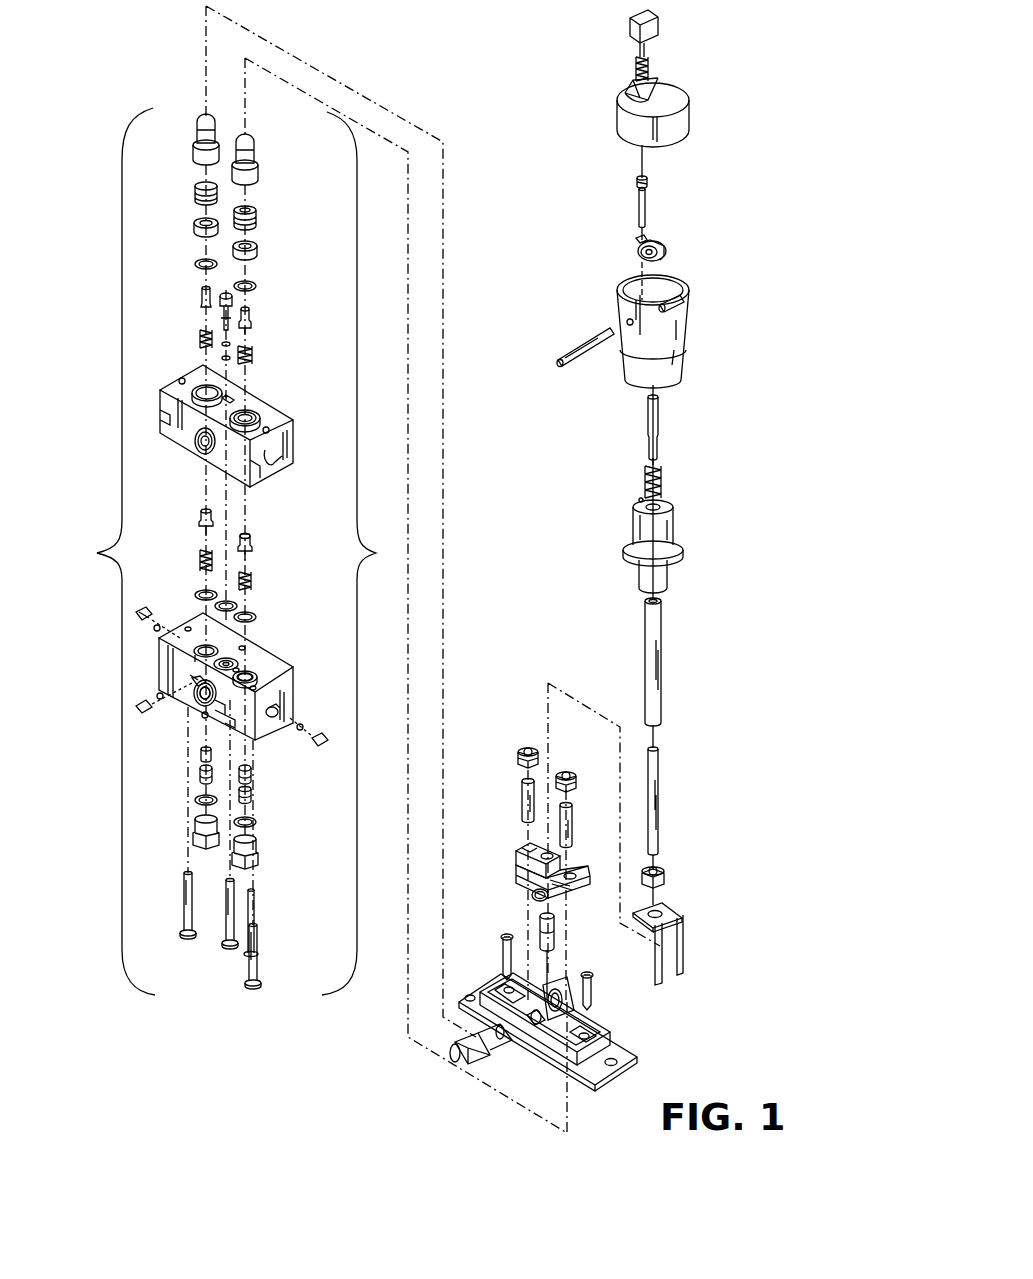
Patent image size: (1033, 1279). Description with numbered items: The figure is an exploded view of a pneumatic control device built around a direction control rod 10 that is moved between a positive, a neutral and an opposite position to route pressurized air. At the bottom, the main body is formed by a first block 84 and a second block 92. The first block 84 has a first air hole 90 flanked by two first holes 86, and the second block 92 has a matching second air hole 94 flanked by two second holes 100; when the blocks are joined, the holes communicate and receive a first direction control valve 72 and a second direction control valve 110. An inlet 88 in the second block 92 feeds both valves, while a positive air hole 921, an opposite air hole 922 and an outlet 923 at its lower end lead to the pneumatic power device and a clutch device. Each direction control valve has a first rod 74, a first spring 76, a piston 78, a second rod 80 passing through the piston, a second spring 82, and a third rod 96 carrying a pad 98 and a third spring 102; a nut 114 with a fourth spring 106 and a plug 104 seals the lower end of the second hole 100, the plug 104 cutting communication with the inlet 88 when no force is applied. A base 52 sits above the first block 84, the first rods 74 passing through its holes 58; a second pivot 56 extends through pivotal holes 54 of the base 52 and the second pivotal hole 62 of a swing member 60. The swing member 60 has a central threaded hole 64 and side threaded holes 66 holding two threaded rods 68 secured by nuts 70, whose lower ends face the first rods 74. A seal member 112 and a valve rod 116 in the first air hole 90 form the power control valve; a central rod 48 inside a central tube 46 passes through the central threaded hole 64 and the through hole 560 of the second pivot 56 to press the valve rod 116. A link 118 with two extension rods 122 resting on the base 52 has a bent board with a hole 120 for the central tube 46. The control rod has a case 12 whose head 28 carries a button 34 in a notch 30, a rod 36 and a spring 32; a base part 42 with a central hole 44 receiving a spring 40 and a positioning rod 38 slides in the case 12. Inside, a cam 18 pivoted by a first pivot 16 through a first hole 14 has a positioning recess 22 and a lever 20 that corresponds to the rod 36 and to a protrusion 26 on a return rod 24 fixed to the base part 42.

The direction control rod 10 is at (726, 274).
The case 12 is at (686, 328).
The first hole 14 is at (627, 322).
The first pivot 16 is at (560, 360).
The cam 18 is at (664, 246).
The lever 20 is at (636, 238).
The positioning recess 22 is at (640, 270).
The return rod 24 is at (646, 200).
The protrusion 26 is at (638, 180).
The head 28 is at (680, 100).
The notch 30 is at (634, 90).
The spring 32 is at (636, 66).
The button 34 is at (650, 15).
The rod 36 is at (648, 42).
The positioning rod 38 is at (656, 420).
The spring 40 is at (662, 480).
The base part 42 is at (675, 535).
The central hole 44 is at (650, 507).
The central tube 46 is at (660, 672).
The central rod 48 is at (658, 825).
The base 52 is at (485, 998).
The pivotal holes 54 is at (535, 1025).
The second pivot 56 is at (460, 1047).
The through hole 560 is at (470, 1060).
The holes 58 is at (508, 988).
The swing member 60 is at (530, 882).
The second pivotal hole 62 is at (534, 898).
The central threaded hole 64 is at (548, 852).
The threaded hole 66 is at (530, 850).
The threaded rods 68 is at (568, 845).
The nuts 70 is at (560, 772).
The first direction control valve 72 is at (363, 553).
The first rod 74 is at (250, 150).
The first spring 76 is at (256, 215).
The piston 78 is at (258, 250).
The second rod 80 is at (251, 325).
The second spring 82 is at (255, 352).
The first block 84 is at (180, 390).
The first holes 86 is at (252, 416).
The inlet 88 is at (192, 680).
The first air hole 90 is at (231, 400).
The second block 92 is at (268, 668).
The positive air hole 921 is at (280, 712).
The opposite air hole 922 is at (195, 655).
The outlet 923 is at (190, 698).
The second air hole 94 is at (228, 664).
The third rod 96 is at (251, 540).
The pad 98 is at (246, 530).
The second holes 100 is at (252, 678).
The third spring 102 is at (253, 580).
The plug 104 is at (252, 770).
The fourth spring 106 is at (252, 795).
The second direction control valve 110 is at (110, 551).
The seal member 112 is at (208, 303).
The nut 114 is at (258, 850).
The valve rod 116 is at (552, 928).
The link 118 is at (672, 922).
The hole 120 is at (660, 908).
The extension rods 122 is at (680, 957).